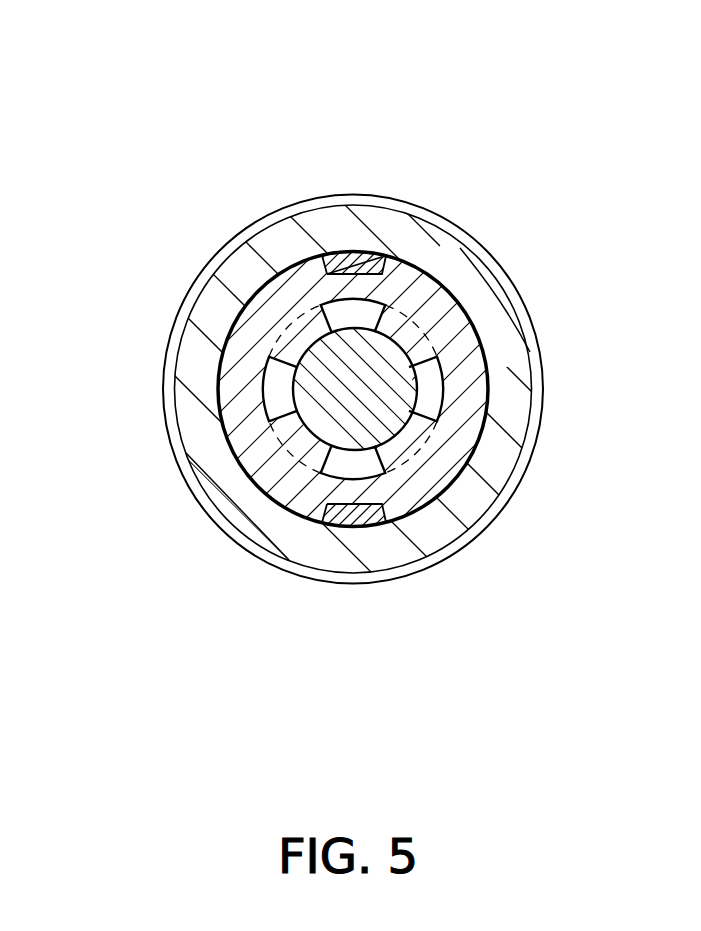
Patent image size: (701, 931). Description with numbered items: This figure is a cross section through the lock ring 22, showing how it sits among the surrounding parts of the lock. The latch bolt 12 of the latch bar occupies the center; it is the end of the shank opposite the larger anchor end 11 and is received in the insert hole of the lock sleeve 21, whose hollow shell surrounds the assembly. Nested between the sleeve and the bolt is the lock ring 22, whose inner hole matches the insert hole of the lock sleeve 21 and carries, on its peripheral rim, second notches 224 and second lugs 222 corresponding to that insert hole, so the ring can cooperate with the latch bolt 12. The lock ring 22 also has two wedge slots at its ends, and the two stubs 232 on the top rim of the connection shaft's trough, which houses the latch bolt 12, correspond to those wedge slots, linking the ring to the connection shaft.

The anchor end 11 is at (230, 237).
The latch bolt 12 is at (385, 367).
The lock sleeve 21 is at (288, 240).
The lock ring 22 is at (428, 290).
The second lugs 222 is at (410, 443).
The second notches 224 is at (437, 383).
The stubs 232 is at (358, 262).